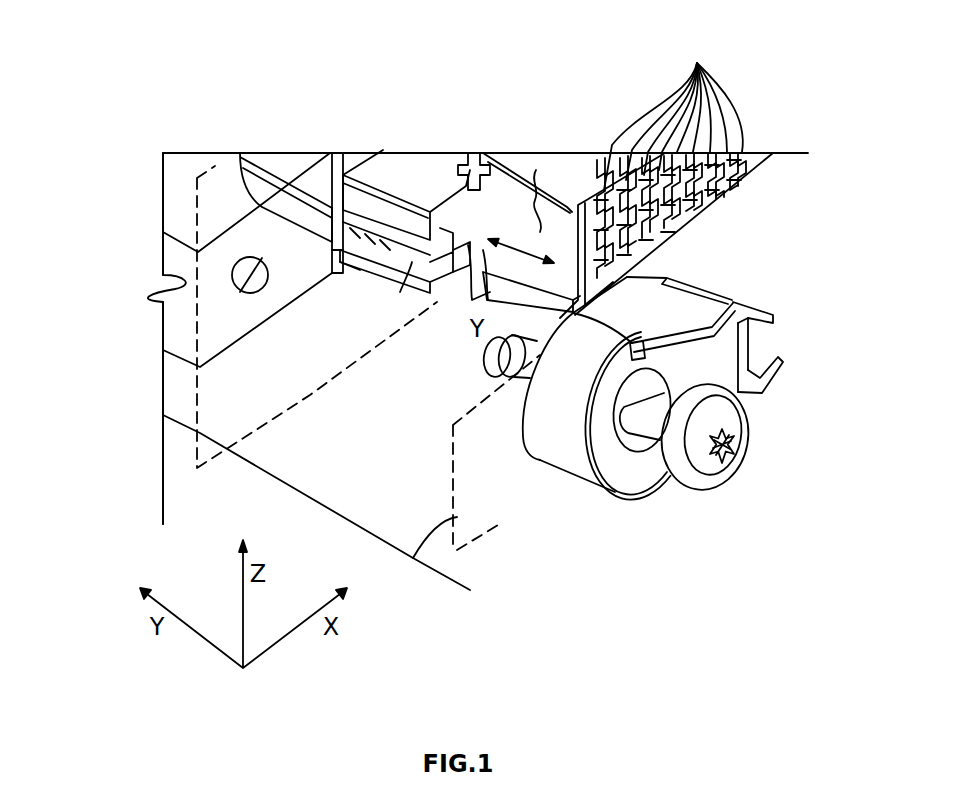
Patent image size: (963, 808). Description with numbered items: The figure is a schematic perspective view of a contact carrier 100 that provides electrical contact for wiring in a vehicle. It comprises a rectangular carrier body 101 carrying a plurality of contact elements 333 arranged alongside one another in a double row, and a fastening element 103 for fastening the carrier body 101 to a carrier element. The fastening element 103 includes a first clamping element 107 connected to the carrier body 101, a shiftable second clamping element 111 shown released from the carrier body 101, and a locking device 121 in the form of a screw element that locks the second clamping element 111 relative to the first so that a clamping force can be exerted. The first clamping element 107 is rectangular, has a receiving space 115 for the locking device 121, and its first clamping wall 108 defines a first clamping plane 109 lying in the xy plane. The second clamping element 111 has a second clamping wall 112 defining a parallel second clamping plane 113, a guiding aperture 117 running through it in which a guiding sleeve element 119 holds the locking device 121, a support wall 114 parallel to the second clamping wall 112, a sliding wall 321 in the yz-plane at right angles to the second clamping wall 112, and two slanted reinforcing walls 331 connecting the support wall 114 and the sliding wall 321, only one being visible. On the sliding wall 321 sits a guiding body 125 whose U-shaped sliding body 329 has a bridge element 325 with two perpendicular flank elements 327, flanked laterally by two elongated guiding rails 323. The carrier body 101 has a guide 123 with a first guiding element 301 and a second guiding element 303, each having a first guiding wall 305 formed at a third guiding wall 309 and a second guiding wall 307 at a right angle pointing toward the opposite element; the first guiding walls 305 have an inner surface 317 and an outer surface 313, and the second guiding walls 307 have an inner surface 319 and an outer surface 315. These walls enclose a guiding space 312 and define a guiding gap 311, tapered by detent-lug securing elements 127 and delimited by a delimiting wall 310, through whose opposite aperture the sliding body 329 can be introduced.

The contact carrier 100 is at (26, 98).
The carrier body 101 is at (240, 152).
The fastening element 103 is at (288, 486).
The first clamping element 107 is at (165, 327).
The first clamping wall 108 is at (222, 277).
The first clamping plane 109 is at (222, 172).
The second clamping element 111 is at (556, 470).
The second clamping wall 112 is at (520, 434).
The second clamping plane 113 is at (413, 560).
The support wall 114 is at (607, 397).
The receiving space 115 is at (259, 300).
The guiding aperture 117 is at (608, 490).
The guiding sleeve element 119 is at (630, 452).
The locking device 121 is at (708, 489).
The guide 123 is at (237, 290).
The guiding body 125 is at (770, 396).
The securing element 127 is at (400, 292).
The first guiding element 301 is at (363, 283).
The second guiding element 303 is at (373, 162).
The first guiding wall 305 is at (432, 173).
The second guiding wall 307 is at (352, 200).
The third guiding wall 309 is at (588, 197).
The delimiting wall 310 is at (328, 195).
The guiding gap 311 is at (332, 226).
The guiding space 312 is at (536, 170).
The outer surface 313 is at (425, 173).
The outer surface 315 is at (328, 153).
The inner surface 317 is at (480, 153).
The inner surface 319 is at (412, 288).
The sliding wall 321 is at (740, 405).
The guiding rails 323 is at (687, 277).
The bridge element 325 is at (757, 345).
The flank elements 327 is at (757, 313).
The sliding body 329 is at (824, 341).
The reinforcing walls 331 is at (700, 315).
The contact elements 333 is at (673, 113).